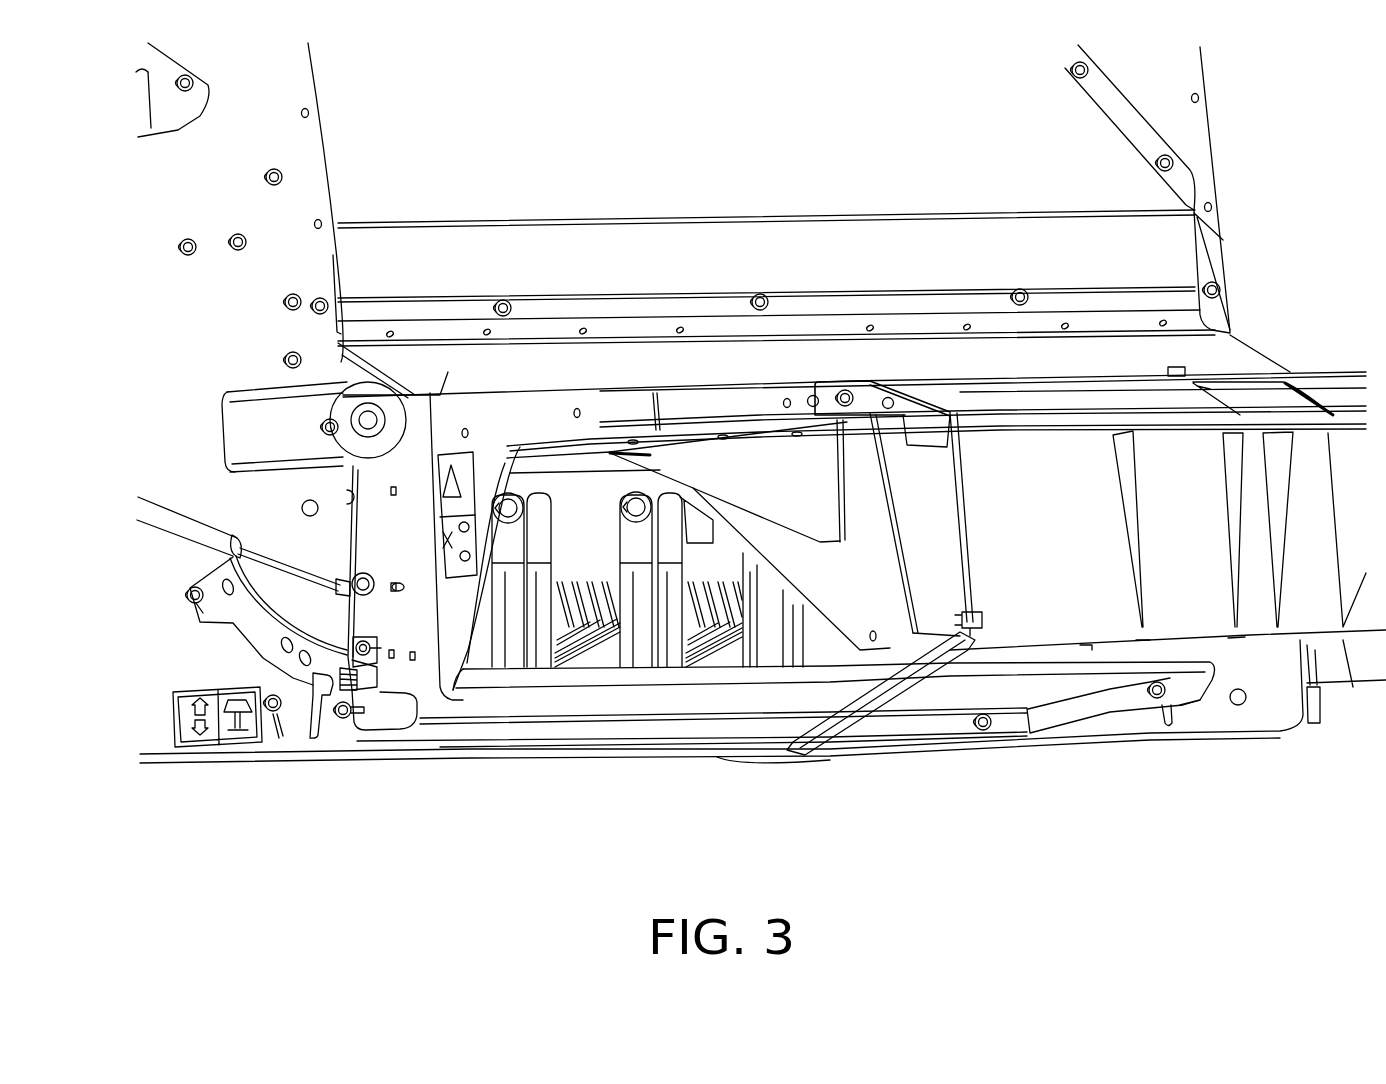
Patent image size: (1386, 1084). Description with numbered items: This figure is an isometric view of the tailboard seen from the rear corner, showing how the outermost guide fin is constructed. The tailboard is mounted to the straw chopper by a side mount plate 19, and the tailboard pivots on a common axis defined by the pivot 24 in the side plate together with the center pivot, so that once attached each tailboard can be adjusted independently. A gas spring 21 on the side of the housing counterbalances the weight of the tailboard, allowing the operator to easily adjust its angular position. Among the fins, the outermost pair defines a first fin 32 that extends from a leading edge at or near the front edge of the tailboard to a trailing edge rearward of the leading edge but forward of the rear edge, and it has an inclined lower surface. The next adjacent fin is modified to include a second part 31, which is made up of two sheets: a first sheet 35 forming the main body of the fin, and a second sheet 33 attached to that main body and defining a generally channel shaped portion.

The side mount plate 19 is at (380, 523).
The gas spring 21 is at (188, 523).
The pivot 24 is at (371, 423).
The second part of fin 31 is at (858, 478).
The first fin 32 is at (733, 473).
The second sheet 33 is at (883, 682).
The first sheet 35 is at (865, 553).